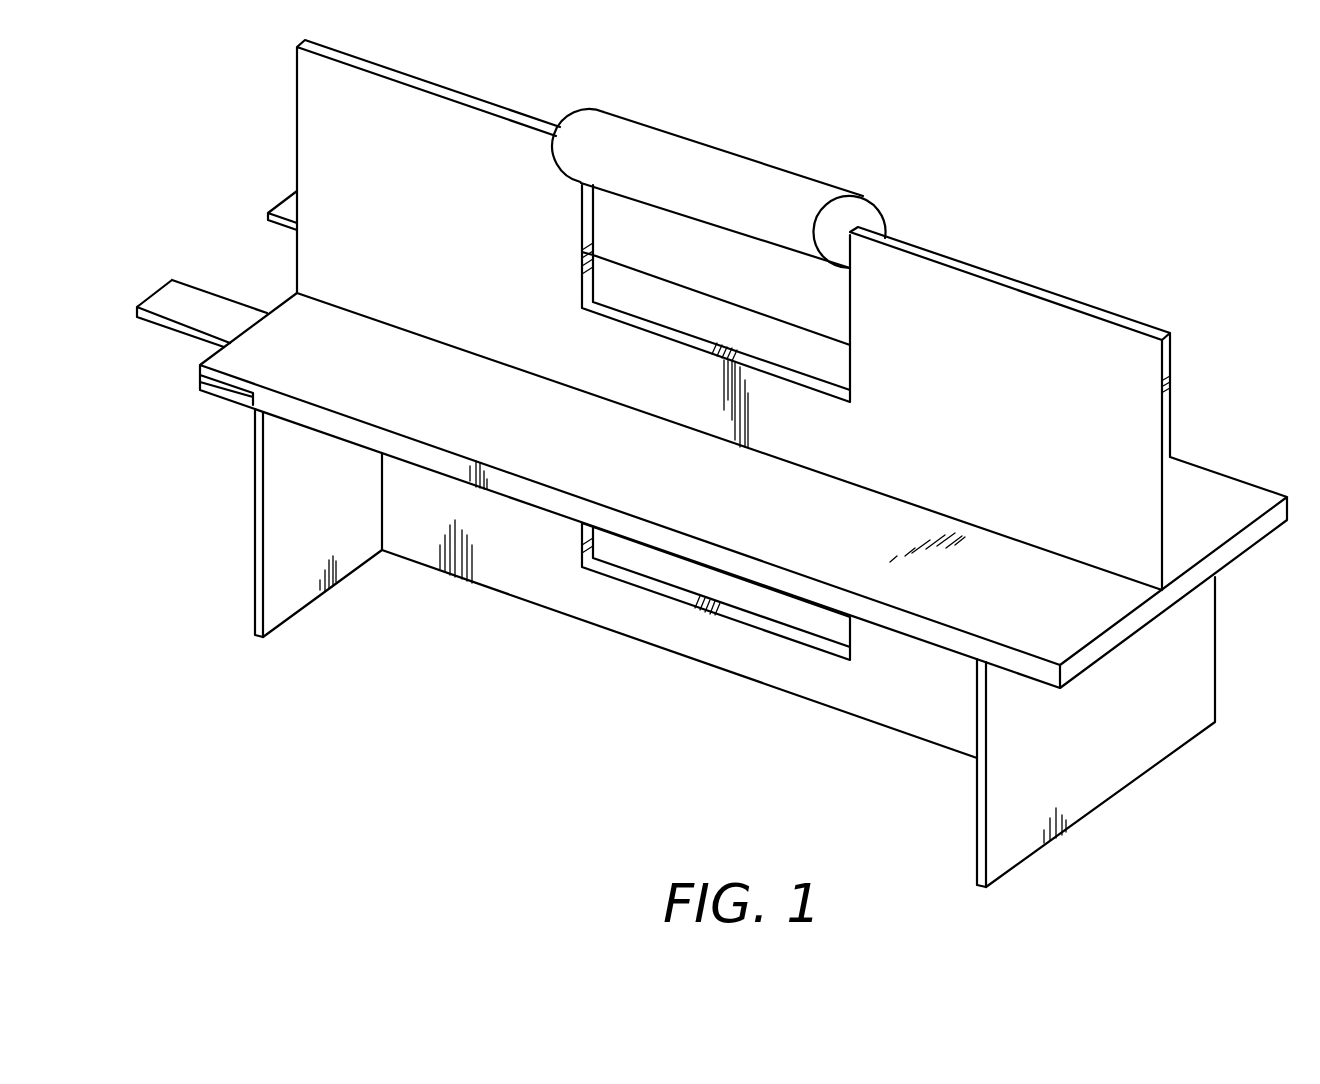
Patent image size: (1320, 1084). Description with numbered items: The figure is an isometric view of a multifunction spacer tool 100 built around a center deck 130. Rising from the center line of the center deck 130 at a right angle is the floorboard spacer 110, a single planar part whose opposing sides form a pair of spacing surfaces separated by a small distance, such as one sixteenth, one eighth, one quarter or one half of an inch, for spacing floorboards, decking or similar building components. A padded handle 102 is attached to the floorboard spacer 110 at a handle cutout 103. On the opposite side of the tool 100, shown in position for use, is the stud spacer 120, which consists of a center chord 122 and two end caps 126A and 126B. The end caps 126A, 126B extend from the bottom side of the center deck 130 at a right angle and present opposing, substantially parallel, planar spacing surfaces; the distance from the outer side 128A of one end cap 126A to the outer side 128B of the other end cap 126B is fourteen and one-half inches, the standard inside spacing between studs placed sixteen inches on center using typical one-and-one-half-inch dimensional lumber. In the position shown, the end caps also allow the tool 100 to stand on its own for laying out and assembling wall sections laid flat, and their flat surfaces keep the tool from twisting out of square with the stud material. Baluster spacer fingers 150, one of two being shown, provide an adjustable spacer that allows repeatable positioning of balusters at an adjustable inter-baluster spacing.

The tool 100 is at (1200, 100).
The padded handle 102 is at (725, 162).
The handle cutout 103 is at (842, 320).
The floorboard spacer 110 is at (988, 278).
The stud spacer 120 is at (532, 592).
The center chord 122 is at (880, 722).
The end cap 126A is at (977, 822).
The end cap 126B is at (263, 572).
The outer side of end cap 128A is at (1210, 680).
The outer side of end cap 128B is at (237, 495).
The center deck 130 is at (351, 328).
The baluster spacer fingers 150 is at (211, 300).